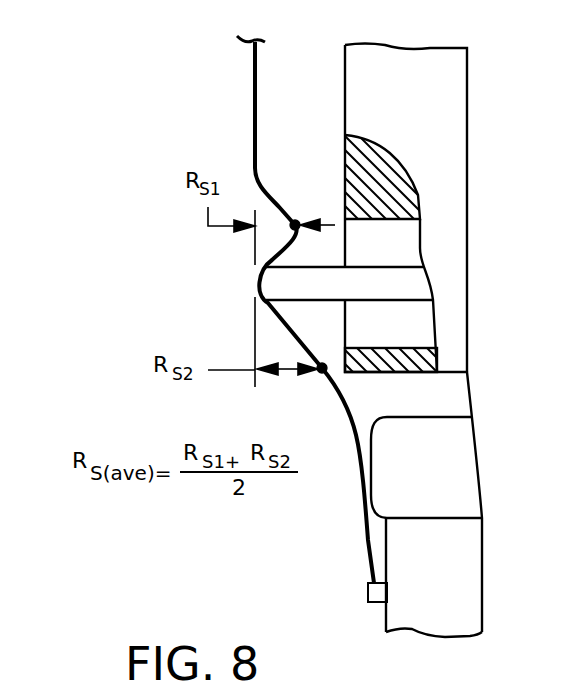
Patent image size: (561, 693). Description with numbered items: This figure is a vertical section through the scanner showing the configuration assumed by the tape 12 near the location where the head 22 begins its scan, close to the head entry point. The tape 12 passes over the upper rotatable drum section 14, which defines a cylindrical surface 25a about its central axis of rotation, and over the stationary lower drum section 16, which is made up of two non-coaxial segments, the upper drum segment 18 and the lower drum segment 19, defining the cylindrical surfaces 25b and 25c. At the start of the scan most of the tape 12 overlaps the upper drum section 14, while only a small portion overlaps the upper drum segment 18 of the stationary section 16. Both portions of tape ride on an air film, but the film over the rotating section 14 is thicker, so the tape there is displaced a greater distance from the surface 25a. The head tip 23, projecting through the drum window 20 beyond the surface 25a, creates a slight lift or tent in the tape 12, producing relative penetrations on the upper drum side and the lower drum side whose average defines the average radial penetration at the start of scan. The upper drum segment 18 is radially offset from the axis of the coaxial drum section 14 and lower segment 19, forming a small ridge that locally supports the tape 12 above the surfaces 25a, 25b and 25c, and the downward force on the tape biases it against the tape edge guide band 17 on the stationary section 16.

The tape 12 is at (255, 108).
The upper rotatable drum section 14 is at (325, 79).
The cylindrical surface 25a is at (345, 130).
The head 22 is at (355, 263).
The head tip 23 is at (257, 283).
The drum window 20 is at (358, 345).
The cylindrical surface 25b is at (370, 435).
The upper drum segment 18 is at (348, 495).
The cylindrical surface 25c is at (385, 554).
The tape edge guide band 17 is at (368, 592).
The lower drum segment 19 is at (370, 616).
The stationary lower drum section 16 is at (370, 645).